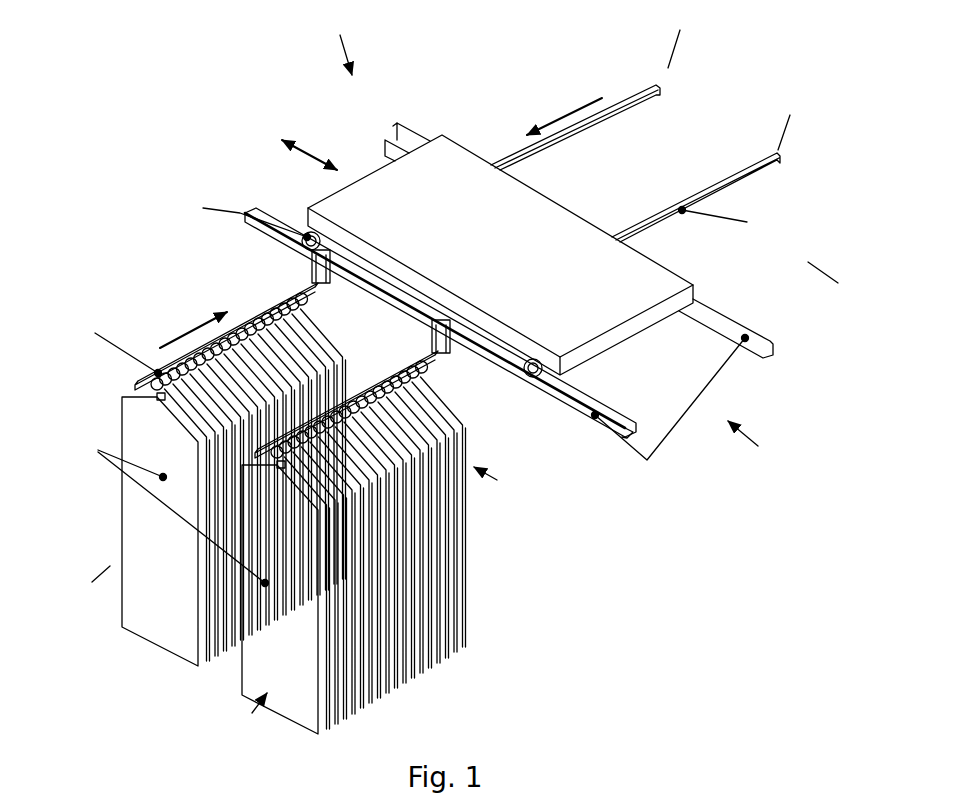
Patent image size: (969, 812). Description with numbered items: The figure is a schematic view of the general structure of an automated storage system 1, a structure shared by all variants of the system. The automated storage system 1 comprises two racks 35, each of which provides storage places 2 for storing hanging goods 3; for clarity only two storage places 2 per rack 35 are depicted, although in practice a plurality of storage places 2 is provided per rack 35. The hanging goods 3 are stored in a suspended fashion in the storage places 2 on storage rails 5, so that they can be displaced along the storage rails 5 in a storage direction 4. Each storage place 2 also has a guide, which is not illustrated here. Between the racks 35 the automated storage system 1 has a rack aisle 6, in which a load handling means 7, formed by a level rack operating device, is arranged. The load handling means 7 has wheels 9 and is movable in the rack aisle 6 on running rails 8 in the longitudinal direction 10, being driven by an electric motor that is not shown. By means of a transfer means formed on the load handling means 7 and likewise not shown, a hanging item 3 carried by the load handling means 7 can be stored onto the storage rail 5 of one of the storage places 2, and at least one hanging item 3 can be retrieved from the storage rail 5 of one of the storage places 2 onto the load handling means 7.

The automated storage system 1 is at (464, 367).
The storage place 2 is at (435, 367).
The hanging goods 3 is at (267, 513).
The storage direction 4 is at (381, 215).
The storage rail 5 is at (423, 271).
The rack aisle 6 is at (513, 295).
The load handling means 7 is at (483, 273).
The running rails 8 is at (636, 414).
The wheels 9 is at (248, 223).
The longitudinal direction 10 is at (309, 141).
The rack 35 is at (668, 385).